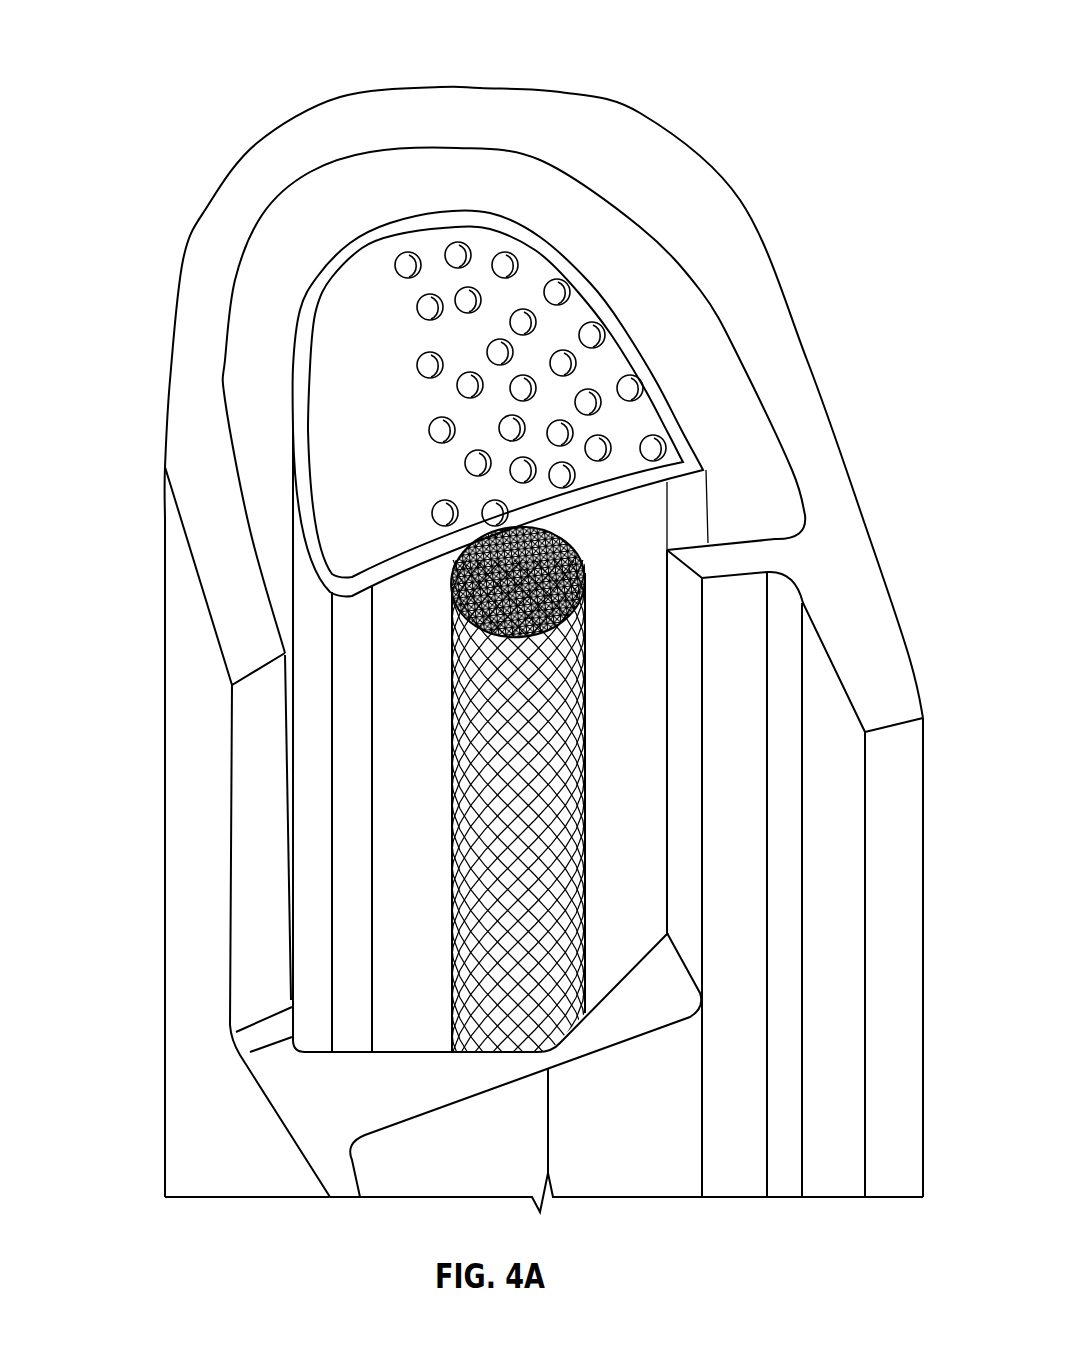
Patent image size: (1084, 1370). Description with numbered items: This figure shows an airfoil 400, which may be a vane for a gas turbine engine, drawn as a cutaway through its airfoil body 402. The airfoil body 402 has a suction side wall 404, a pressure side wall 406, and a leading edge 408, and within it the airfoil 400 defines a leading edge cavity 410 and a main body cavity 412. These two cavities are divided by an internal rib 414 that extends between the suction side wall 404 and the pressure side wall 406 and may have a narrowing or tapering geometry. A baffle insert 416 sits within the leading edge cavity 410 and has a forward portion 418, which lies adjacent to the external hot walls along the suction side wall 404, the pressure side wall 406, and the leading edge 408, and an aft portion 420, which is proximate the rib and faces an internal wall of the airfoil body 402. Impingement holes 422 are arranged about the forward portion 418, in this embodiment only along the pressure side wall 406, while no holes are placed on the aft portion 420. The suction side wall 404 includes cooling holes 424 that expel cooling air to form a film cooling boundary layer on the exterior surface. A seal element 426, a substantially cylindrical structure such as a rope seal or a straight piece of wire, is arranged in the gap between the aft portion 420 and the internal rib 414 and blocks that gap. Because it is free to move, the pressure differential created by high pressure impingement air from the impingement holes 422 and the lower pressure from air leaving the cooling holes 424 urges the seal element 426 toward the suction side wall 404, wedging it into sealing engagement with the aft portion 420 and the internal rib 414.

The airfoil 400 is at (131, 46).
The airfoil body 402 is at (823, 540).
The suction side wall 404 is at (183, 648).
The pressure side wall 406 is at (820, 373).
The leading edge 408 is at (378, 97).
The leading edge cavity 410 is at (250, 346).
The main body cavity 412 is at (821, 747).
The internal rib 414 is at (685, 843).
The baffle insert 416 is at (305, 533).
The forward portion 418 is at (458, 215).
The aft portion 420 is at (390, 590).
The impingement holes 422 is at (432, 399).
The cooling holes 424 is at (704, 342).
The seal element 426 is at (575, 1000).